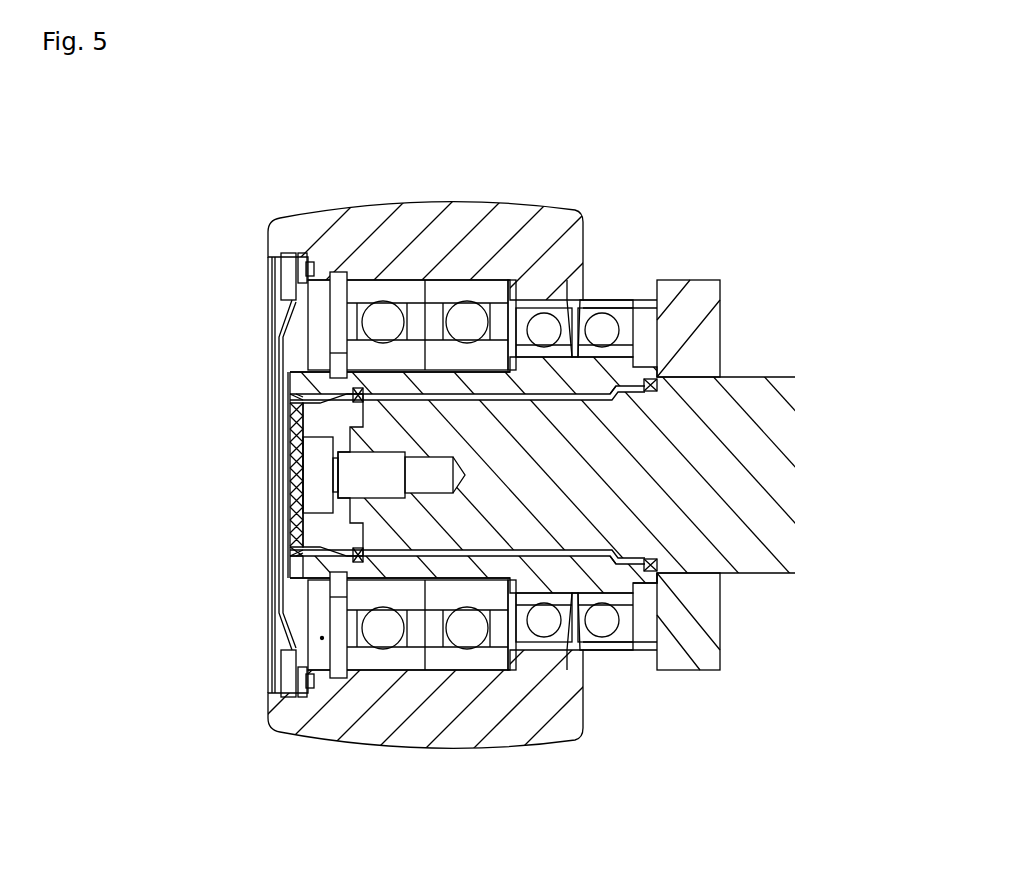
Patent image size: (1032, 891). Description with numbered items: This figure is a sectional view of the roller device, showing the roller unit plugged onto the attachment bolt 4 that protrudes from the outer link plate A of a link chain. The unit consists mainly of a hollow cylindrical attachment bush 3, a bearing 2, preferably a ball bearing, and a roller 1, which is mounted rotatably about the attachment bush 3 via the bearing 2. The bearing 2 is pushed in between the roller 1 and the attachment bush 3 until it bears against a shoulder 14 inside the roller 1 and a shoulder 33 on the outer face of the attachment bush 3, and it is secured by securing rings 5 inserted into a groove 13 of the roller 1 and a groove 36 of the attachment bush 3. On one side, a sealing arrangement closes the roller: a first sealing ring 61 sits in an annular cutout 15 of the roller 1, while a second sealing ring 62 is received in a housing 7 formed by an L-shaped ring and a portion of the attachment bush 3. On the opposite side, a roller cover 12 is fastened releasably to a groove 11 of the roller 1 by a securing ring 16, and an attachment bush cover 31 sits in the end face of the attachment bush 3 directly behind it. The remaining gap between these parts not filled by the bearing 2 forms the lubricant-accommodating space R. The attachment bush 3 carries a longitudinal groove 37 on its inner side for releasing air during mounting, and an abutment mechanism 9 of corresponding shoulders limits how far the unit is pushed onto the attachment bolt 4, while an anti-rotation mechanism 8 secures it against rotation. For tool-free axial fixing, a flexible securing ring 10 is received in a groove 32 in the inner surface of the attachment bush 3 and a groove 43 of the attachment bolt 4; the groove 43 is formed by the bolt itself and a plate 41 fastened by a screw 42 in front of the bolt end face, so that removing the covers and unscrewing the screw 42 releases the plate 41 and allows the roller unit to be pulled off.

The roller 1 is at (392, 205).
The bearing 2 is at (425, 284).
The attachment bush 3 is at (325, 585).
The attachment bolt 4 is at (335, 520).
The securing ring 5 is at (330, 345).
The housing 7 is at (625, 652).
The anti-rotation mechanism 8 is at (648, 394).
The abutment mechanism 9 is at (658, 381).
The securing ring 10 is at (300, 565).
The groove 11 is at (287, 253).
The roller cover 12 is at (288, 395).
The groove 13 is at (335, 272).
The shoulder 14 is at (512, 282).
The annular cutout 15 is at (556, 640).
The securing ring 16 is at (300, 268).
The attachment bush cover 31 is at (296, 511).
The groove 32 is at (340, 562).
The shoulder 33 is at (500, 580).
The groove 36 is at (279, 357).
The groove 37 is at (616, 394).
The plate 41 is at (300, 543).
The screw 42 is at (312, 482).
The groove 43 is at (300, 408).
The first sealing ring 61 is at (572, 300).
The second sealing ring 62 is at (620, 300).
The outer link plate A is at (686, 300).
The lubricant-accommodating space R is at (322, 638).